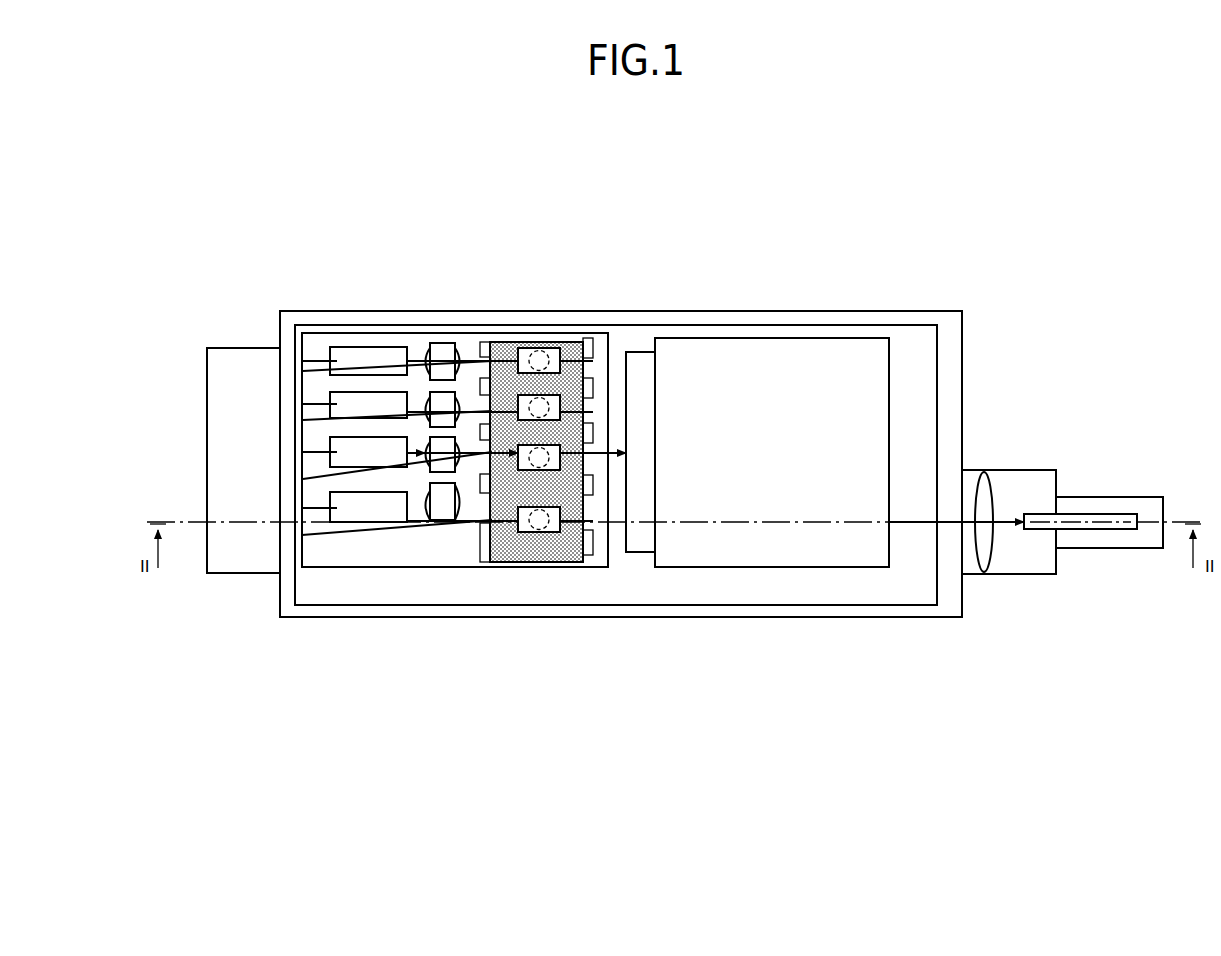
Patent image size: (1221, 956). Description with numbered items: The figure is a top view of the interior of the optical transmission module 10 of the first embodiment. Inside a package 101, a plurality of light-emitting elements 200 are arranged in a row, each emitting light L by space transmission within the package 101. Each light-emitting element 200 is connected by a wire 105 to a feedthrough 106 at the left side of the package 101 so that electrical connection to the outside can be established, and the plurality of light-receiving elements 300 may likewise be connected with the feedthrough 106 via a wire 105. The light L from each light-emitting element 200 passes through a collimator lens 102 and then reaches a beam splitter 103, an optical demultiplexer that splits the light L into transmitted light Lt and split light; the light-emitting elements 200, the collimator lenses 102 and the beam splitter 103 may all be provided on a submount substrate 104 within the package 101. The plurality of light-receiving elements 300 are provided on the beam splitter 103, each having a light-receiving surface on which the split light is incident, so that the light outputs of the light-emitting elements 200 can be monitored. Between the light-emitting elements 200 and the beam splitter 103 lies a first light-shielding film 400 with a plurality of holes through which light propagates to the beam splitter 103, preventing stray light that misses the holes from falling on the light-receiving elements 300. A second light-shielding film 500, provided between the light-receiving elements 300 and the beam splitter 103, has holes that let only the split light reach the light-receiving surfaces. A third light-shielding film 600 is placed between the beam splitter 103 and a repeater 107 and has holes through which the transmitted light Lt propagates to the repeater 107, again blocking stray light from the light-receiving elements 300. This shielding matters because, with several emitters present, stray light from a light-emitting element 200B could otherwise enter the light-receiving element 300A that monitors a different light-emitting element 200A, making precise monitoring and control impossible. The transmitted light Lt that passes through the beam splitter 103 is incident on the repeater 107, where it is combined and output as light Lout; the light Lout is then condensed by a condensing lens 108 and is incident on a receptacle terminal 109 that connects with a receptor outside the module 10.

The optical transmission module 10 is at (901, 187).
The package 101 is at (913, 311).
The collimator lens 102 is at (457, 355).
The beam splitter 103 is at (528, 566).
The submount substrate 104 is at (630, 553).
The wire 105 is at (337, 364).
The feedthrough 106 is at (207, 420).
The repeater 107 is at (890, 428).
The condensing lens 108 is at (993, 550).
The receptacle terminal 109 is at (1103, 513).
The light-emitting element 200 is at (360, 508).
The light-emitting element 200A is at (392, 452).
The light-emitting element 200B is at (388, 410).
The light-receiving element 300 is at (560, 350).
The light-receiving element 300A is at (588, 447).
The first light-shielding film 400 is at (474, 550).
The second light-shielding film 500 is at (485, 362).
The third light-shielding film 600 is at (599, 546).
The light L is at (426, 450).
The transmitted light Lt is at (603, 447).
The light Lout is at (900, 527).